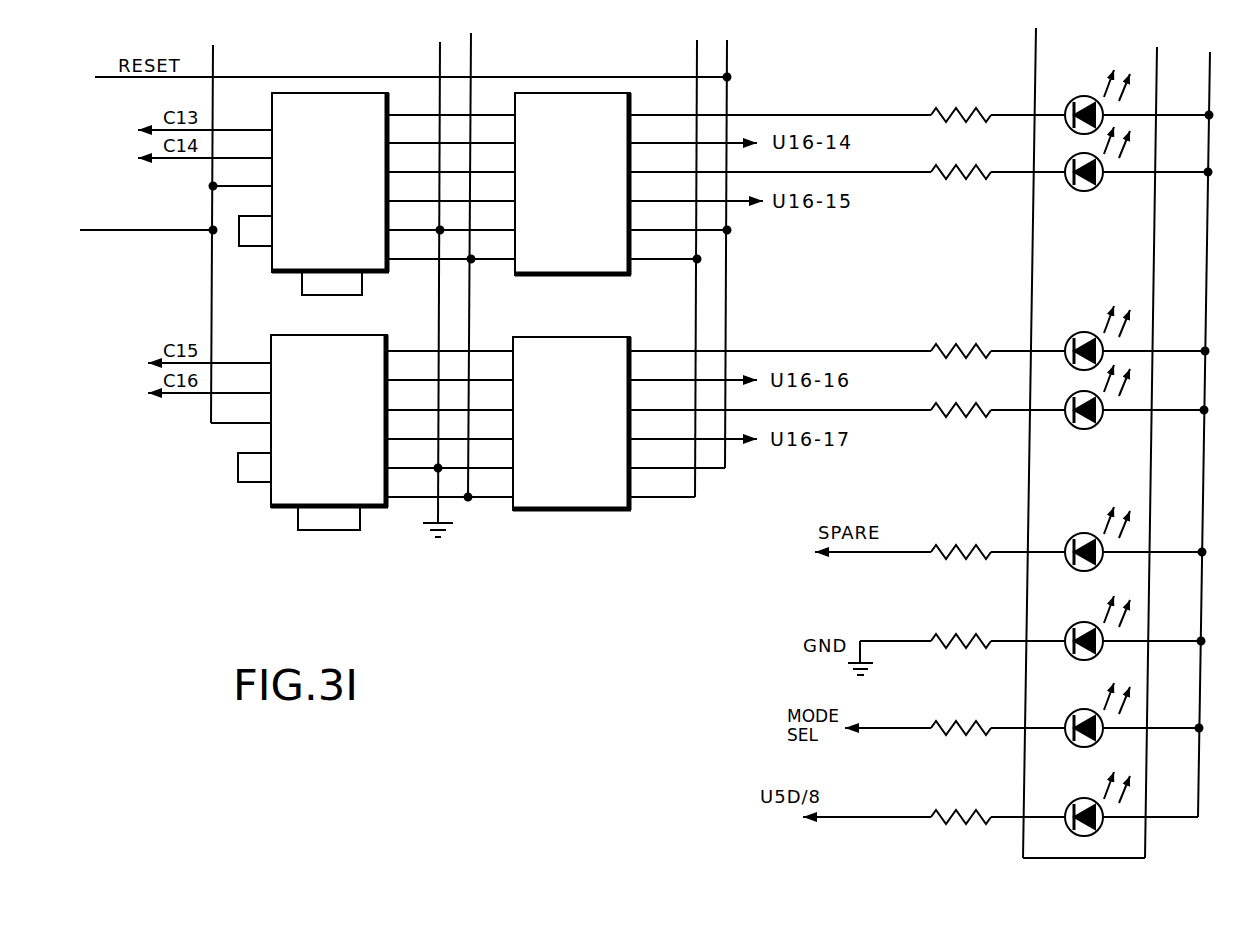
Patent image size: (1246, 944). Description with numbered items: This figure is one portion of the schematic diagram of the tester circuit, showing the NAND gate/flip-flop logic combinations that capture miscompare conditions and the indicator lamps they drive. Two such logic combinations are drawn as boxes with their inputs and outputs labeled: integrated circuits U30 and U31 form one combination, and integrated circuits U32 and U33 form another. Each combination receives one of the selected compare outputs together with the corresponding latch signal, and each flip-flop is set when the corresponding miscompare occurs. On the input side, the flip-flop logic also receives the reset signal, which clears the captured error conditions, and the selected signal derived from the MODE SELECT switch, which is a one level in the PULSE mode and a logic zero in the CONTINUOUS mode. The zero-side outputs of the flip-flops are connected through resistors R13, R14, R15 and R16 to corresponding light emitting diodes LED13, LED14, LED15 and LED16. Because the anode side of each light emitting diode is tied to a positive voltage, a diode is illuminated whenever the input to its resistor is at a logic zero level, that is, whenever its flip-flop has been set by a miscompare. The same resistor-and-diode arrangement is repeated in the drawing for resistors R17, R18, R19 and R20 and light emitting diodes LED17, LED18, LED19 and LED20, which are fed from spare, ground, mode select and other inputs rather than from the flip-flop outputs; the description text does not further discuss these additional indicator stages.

The integrated circuit U30 is at (321, 194).
The integrated circuit U31 is at (590, 183).
The integrated circuit U32 is at (320, 430).
The integrated circuit U33 is at (589, 419).
The resistor R13 is at (961, 92).
The resistor R14 is at (961, 149).
The resistor R15 is at (961, 328).
The resistor R16 is at (961, 387).
The resistor R17, 300 ohm R17 is at (961, 529).
The resistor R18, 300 ohm R18 is at (961, 618).
The resistor R19, 300 ohm R19 is at (961, 705).
The resistor R20, 300 ohm R20 is at (961, 794).
The light emitting diode LED13 is at (1084, 100).
The light emitting diode LED14 is at (1084, 157).
The light emitting diode LED15 is at (1083, 336).
The light emitting diode LED16 is at (1082, 397).
The light emitting diode LED 17 LED17 is at (1081, 537).
The light emitting diode LED 18 LED18 is at (1081, 626).
The light emitting diode LED 19 LED19 is at (1080, 713).
The light emitting diode LED 20 LED20 is at (1080, 802).